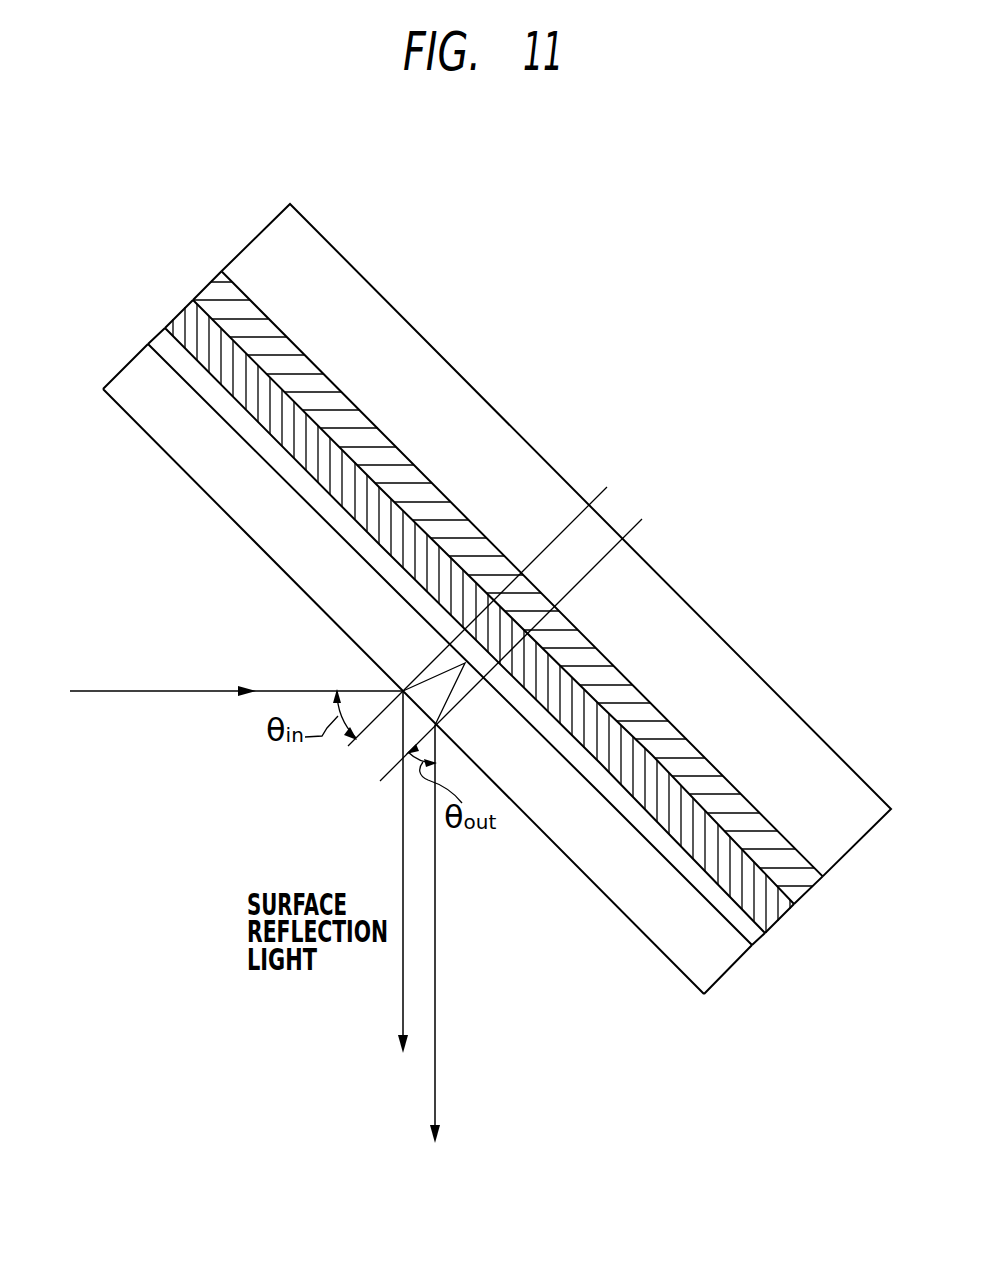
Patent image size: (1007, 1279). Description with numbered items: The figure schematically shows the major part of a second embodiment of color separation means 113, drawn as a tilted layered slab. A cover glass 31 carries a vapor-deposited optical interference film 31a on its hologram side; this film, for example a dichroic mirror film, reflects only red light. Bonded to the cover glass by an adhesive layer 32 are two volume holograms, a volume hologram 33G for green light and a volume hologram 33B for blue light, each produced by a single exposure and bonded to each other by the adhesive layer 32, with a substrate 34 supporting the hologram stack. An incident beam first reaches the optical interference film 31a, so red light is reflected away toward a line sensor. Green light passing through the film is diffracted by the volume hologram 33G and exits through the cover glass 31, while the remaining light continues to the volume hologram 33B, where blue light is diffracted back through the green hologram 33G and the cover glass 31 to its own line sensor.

The color separation means 113 is at (252, 140).
The cover glass 31 is at (130, 358).
The optical interference film 31a is at (729, 945).
The adhesive layer 32 is at (727, 930).
The volume hologram for green light 33G is at (170, 319).
The volume hologram for blue light 33B is at (212, 276).
The substrate 34 is at (260, 228).